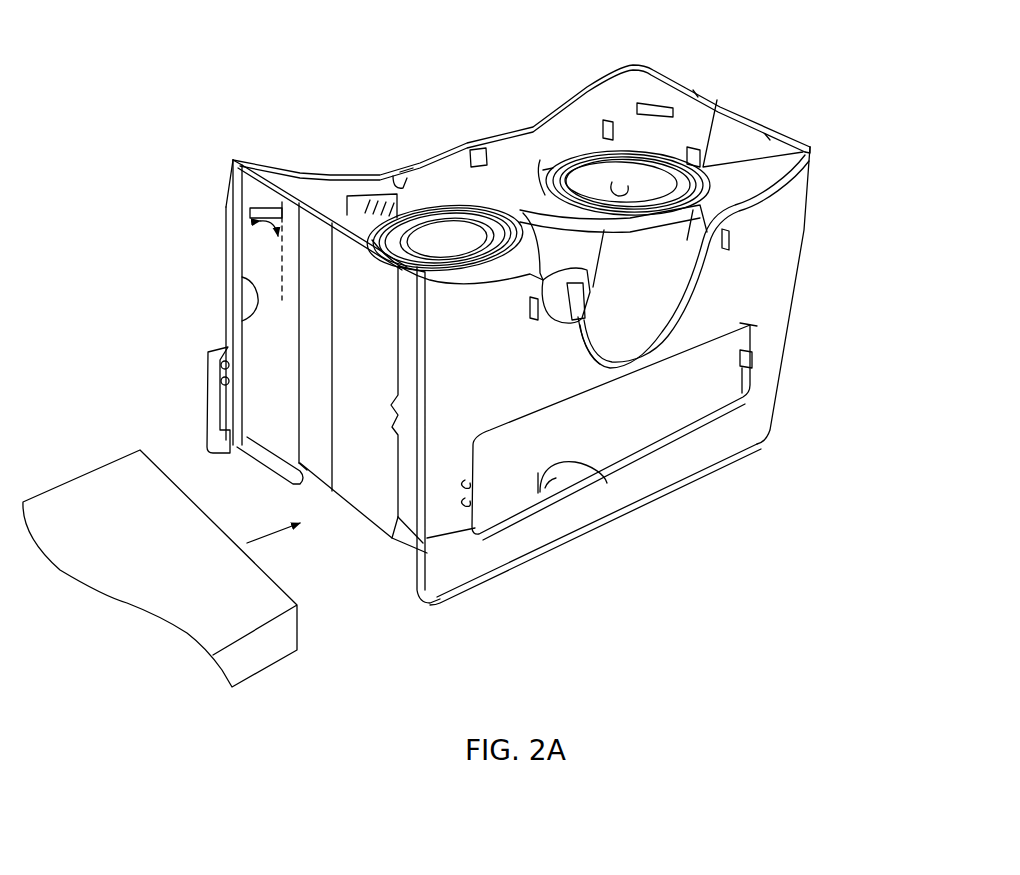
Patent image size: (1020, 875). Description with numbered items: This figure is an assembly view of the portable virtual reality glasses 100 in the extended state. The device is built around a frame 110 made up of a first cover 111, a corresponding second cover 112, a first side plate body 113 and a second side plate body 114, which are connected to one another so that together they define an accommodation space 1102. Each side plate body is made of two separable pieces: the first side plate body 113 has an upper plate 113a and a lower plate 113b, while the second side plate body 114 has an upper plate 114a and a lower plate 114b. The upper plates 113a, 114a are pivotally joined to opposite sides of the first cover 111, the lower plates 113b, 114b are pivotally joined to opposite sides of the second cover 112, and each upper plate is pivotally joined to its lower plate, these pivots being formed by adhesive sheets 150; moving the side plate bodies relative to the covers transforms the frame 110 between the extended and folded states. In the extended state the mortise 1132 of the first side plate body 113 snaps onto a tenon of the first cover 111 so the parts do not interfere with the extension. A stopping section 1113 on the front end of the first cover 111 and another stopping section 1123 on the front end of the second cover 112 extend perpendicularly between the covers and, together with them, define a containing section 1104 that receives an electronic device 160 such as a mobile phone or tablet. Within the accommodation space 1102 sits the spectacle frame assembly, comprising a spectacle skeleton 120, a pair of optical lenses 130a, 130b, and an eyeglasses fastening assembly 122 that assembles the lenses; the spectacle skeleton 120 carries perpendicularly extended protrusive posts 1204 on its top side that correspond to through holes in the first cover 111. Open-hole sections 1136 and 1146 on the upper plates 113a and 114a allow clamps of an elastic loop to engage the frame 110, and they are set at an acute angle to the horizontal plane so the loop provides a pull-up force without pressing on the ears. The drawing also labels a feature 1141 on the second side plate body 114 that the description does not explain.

The portable virtual reality glasses 100 is at (145, 31).
The frame 110 is at (748, 470).
The first cover 111 is at (532, 127).
The second cover 112 is at (612, 514).
The first side plate body 113 is at (797, 97).
The upper plate 113a is at (695, 93).
The lower plate 113b is at (767, 137).
The second side plate body 114 is at (353, 527).
The upper plate 114a is at (273, 357).
The lower plate 114b is at (360, 467).
The spectacle skeleton 120 is at (420, 247).
The eyeglasses fastening assembly 122 is at (365, 225).
The optical lens 130a is at (620, 183).
The optical lens 130b is at (382, 193).
The adhesive sheet 150 is at (333, 333).
The electronic device 160 is at (95, 517).
The accommodation space 1102 is at (623, 328).
The containing section 1104 is at (323, 490).
The stopping section 1113 is at (257, 447).
The stopping section 1123 is at (577, 473).
The mortise 1132 is at (253, 317).
The open-hole section 1136 is at (633, 103).
The protrusion 1141 is at (250, 302).
The open-hole section 1146 is at (253, 215).
The protrusive post 1204 is at (418, 173).